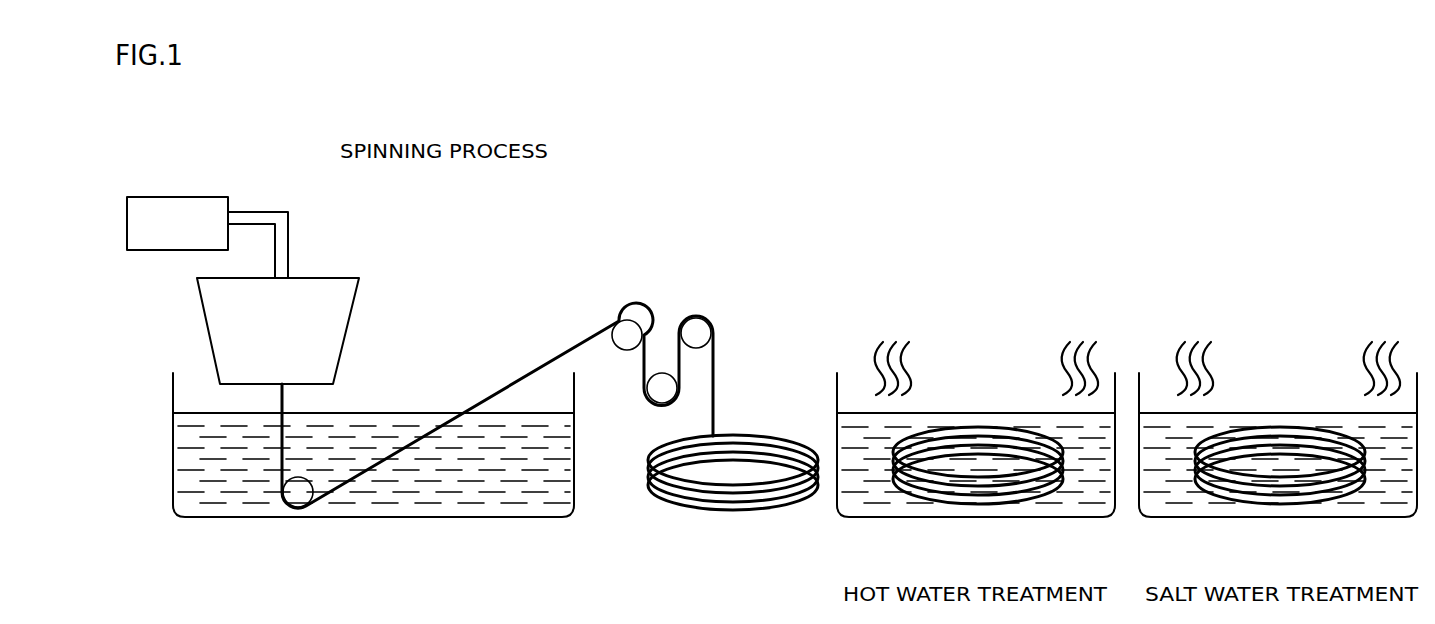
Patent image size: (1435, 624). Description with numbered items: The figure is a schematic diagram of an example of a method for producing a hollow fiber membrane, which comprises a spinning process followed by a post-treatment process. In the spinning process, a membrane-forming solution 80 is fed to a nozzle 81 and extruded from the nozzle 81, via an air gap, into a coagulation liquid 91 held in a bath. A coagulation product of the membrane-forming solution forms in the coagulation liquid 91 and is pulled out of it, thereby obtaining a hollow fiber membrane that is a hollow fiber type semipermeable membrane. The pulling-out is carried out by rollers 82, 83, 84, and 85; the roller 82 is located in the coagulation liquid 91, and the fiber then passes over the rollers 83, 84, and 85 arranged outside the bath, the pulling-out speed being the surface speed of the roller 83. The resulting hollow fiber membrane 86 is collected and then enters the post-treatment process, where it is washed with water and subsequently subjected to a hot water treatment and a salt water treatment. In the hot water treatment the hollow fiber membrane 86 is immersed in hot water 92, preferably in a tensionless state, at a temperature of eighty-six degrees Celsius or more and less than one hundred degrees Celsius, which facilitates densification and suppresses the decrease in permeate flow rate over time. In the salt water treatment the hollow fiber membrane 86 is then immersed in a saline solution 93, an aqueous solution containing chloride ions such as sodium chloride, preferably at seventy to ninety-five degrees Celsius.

The membrane-forming solution 80 is at (143, 251).
The nozzle 81 is at (348, 323).
The roller 82 is at (300, 500).
The roller 83 is at (627, 338).
The roller 84 is at (662, 383).
The roller 85 is at (697, 340).
The hollow fiber membrane 86 is at (748, 512).
The coagulation liquid 91 is at (525, 500).
The hot water 92 is at (1072, 500).
The saline solution 93 is at (1375, 500).